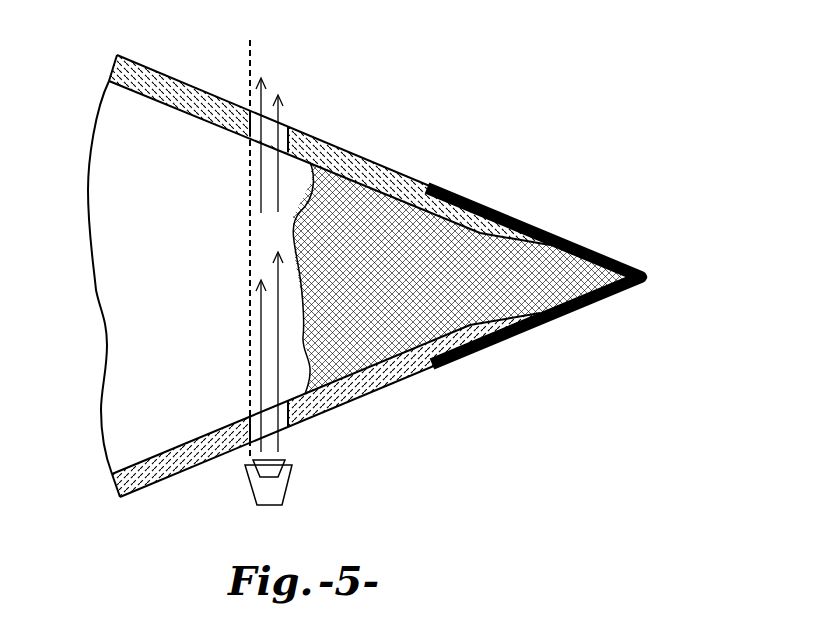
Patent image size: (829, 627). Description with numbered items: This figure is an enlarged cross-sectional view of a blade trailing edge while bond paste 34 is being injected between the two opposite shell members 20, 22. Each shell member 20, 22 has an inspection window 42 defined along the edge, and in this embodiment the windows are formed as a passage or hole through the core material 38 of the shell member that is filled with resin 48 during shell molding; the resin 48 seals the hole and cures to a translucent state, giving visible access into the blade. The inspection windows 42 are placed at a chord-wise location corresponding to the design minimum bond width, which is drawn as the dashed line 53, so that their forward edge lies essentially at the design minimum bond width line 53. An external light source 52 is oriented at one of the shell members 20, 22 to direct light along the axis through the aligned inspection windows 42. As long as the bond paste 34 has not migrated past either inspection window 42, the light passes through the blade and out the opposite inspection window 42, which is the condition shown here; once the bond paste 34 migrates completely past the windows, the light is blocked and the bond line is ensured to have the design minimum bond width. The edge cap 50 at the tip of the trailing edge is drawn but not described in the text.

The shell member 20 is at (170, 83).
The shell member 22 is at (170, 482).
The bond paste 34 is at (410, 287).
The core material 38 is at (388, 170).
The inspection window 42 is at (300, 88).
The resin 48 is at (254, 127).
The tip cap 50 is at (640, 268).
The external light source 52 is at (287, 477).
The design minimum bond width line 53 is at (248, 278).